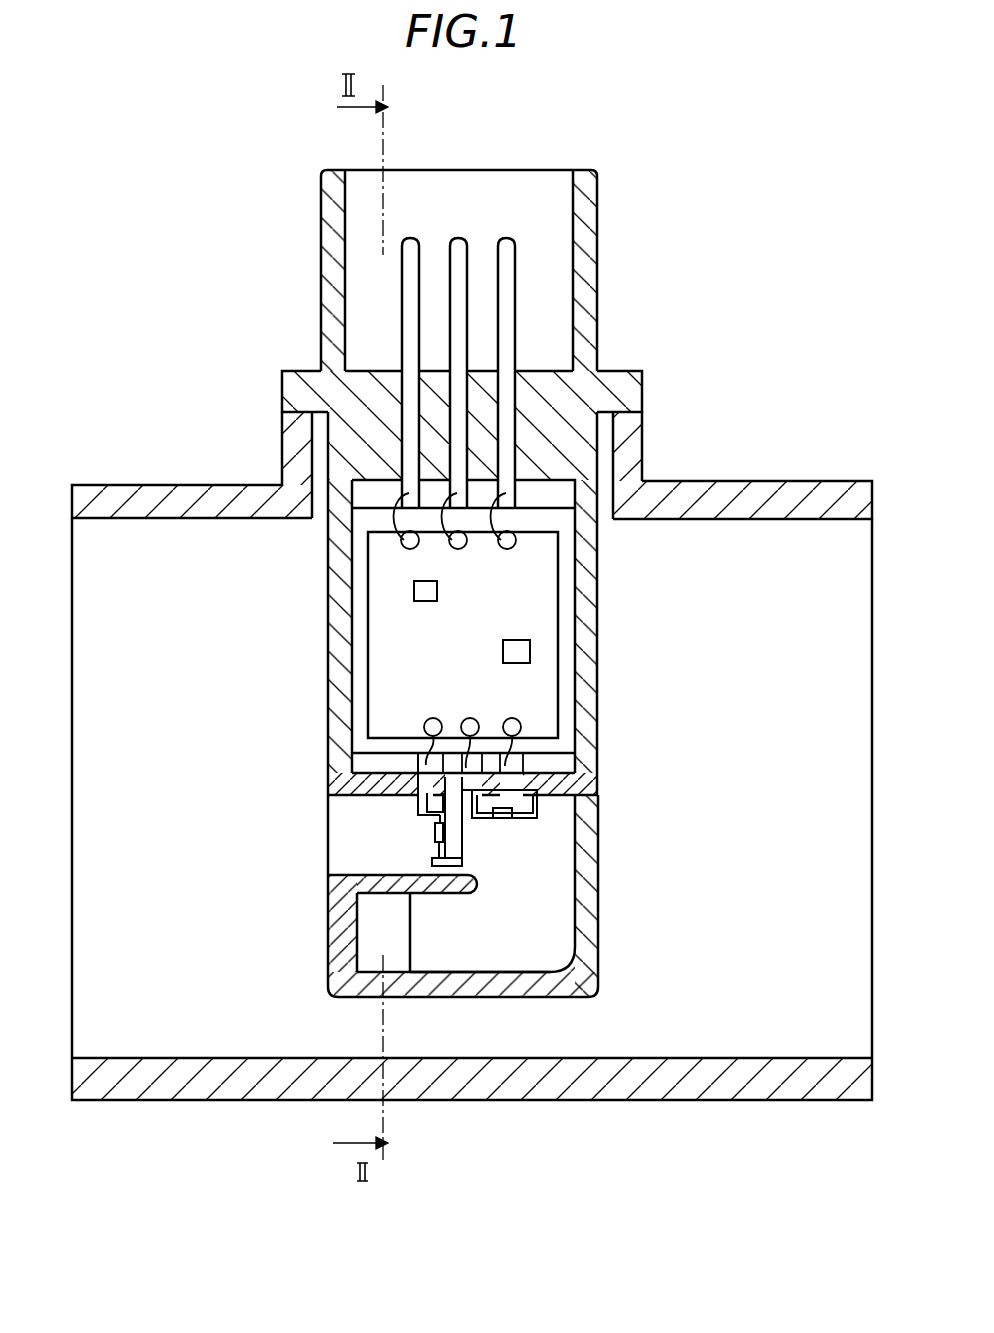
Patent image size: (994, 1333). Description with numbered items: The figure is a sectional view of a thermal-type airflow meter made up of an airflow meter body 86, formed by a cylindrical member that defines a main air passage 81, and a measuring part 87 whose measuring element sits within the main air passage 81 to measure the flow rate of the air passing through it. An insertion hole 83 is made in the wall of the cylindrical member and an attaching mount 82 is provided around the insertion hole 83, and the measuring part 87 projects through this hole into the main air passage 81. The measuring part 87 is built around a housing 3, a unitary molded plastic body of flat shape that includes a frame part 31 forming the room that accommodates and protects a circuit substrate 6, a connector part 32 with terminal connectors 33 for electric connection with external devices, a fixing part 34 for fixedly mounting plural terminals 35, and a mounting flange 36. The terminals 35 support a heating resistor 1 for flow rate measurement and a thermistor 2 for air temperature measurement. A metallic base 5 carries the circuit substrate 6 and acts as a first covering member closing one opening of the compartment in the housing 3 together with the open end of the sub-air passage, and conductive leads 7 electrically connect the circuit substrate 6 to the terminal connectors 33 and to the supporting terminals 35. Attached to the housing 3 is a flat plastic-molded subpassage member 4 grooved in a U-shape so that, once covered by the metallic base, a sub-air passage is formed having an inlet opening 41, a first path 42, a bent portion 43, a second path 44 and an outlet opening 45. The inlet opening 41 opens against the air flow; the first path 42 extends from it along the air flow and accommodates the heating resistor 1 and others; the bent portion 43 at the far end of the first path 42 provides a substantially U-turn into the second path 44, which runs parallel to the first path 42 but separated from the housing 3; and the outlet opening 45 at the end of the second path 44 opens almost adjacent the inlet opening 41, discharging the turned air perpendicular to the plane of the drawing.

The heating resistor 1 is at (400, 861).
The thermistor 2 is at (507, 817).
The housing 3 is at (330, 638).
The subpassage member 4 is at (590, 835).
The metallic base 5 is at (555, 742).
The circuit substrate 6 is at (510, 680).
The conductive leads 7 is at (400, 518).
The frame part 31 is at (583, 612).
The connector part 32 is at (585, 262).
The terminal connectors 33 is at (507, 238).
The fixing part 34 is at (375, 770).
The terminals 35 is at (420, 813).
The mounting flange 36 is at (642, 372).
The inlet opening 41 is at (330, 816).
The first path 42 is at (345, 910).
The bent portion 43 is at (538, 900).
The second path 44 is at (457, 948).
The outlet opening 45 is at (375, 957).
The main air passage 81 is at (93, 577).
The attaching mount 82 is at (290, 400).
The insertion hole 83 is at (605, 463).
The airflow meter body 86 is at (221, 496).
The measuring part 87 is at (447, 171).